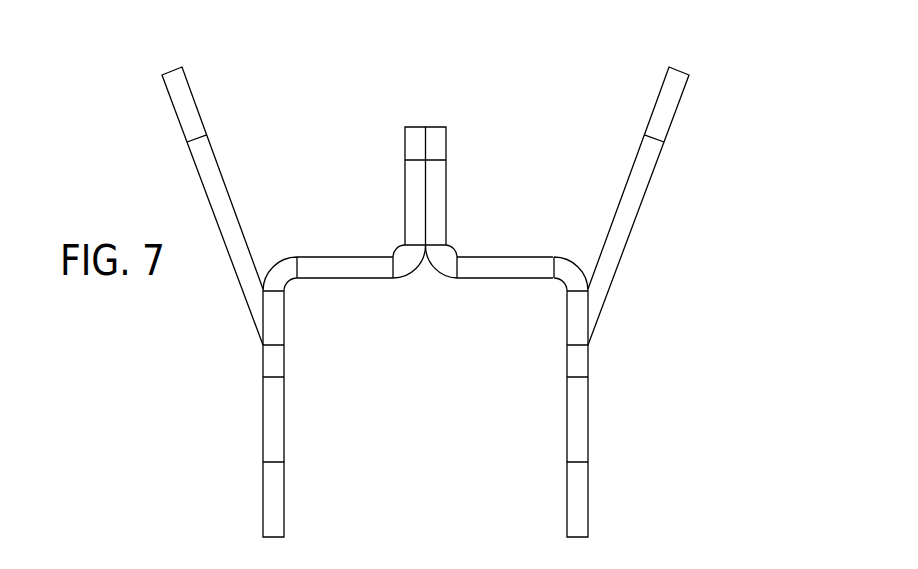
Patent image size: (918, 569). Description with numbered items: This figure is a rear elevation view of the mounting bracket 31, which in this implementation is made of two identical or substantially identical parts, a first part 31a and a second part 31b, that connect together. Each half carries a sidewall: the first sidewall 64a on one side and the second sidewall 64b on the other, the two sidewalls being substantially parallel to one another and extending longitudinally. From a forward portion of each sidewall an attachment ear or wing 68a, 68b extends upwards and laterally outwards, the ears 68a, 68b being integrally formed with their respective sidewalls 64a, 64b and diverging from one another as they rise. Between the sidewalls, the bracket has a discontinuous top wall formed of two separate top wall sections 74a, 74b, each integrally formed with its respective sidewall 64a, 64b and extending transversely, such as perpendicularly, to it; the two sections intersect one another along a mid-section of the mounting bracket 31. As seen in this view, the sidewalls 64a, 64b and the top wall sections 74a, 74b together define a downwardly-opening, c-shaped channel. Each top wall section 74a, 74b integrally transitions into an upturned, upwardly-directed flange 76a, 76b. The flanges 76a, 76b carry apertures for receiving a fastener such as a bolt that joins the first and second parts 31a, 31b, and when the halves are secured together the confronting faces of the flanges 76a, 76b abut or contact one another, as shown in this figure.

The mounting bracket 31 is at (757, 101).
The first part 31a is at (263, 420).
The second part 31b is at (588, 420).
The first sidewall 64a is at (263, 500).
The second sidewall 64b is at (588, 500).
The attachment ear 68a is at (173, 110).
The attachment ear 68b is at (678, 107).
The top wall section 74a is at (345, 257).
The top wall section 74b is at (507, 257).
The flange 76a is at (404, 143).
The flange 76b is at (446, 143).